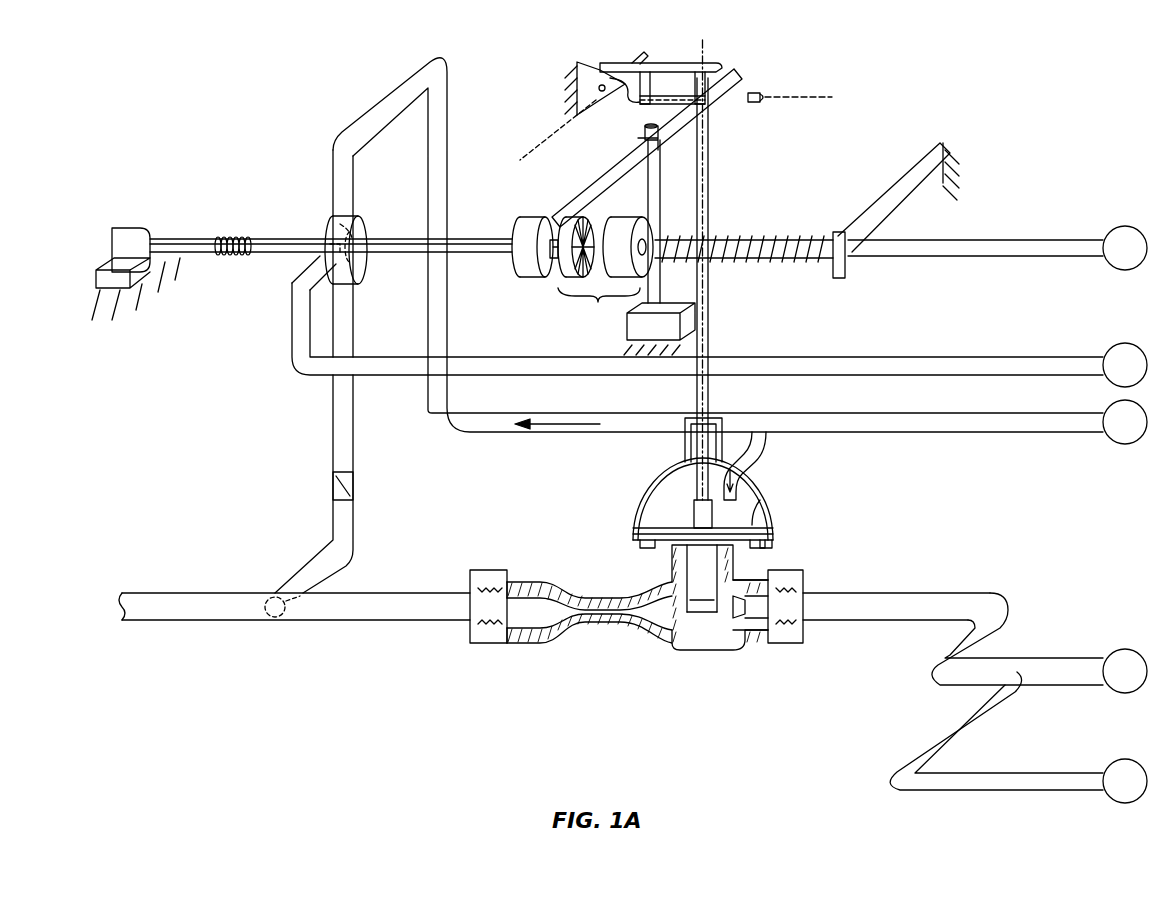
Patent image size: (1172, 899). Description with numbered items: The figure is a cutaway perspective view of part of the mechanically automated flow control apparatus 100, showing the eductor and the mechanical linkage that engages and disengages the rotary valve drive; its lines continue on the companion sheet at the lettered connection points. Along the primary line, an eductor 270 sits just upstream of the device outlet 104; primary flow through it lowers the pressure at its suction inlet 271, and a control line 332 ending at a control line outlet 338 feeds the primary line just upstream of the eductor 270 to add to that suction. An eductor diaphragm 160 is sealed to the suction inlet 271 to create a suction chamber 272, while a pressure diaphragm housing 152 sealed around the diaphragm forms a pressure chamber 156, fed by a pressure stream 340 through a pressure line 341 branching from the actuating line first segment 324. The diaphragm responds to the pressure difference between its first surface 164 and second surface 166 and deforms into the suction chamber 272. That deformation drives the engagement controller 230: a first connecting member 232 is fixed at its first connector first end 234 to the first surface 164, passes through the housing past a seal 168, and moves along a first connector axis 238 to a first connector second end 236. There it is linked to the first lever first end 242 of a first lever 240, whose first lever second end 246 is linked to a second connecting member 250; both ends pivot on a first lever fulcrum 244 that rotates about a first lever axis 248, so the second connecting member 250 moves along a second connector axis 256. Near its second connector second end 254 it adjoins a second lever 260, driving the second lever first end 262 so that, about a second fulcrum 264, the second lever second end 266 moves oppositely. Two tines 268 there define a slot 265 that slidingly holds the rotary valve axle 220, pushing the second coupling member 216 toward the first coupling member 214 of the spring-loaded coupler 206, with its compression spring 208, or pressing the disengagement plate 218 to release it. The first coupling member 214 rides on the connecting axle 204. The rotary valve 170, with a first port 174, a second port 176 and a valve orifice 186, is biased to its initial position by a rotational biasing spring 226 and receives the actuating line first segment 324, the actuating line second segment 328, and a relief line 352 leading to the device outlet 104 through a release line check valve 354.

The flow control apparatus 100 is at (232, 56).
The device outlet 104 is at (190, 598).
The pressure diaphragm housing 152 is at (760, 478).
The pressure chamber 156 is at (652, 520).
The eductor diaphragm 160 is at (633, 530).
The first surface 164 is at (755, 520).
The second surface 166 is at (770, 545).
The seal 168 is at (690, 445).
The rotary valve 170 is at (366, 268).
The first port 174 is at (333, 222).
The second port 176 is at (364, 224).
The valve orifice 186 is at (328, 216).
The connecting axle 204 is at (950, 240).
The spring-loaded coupler 206 is at (555, 258).
The compression spring 208 is at (745, 262).
The first coupling member 214 is at (635, 268).
The second coupling member 216 is at (550, 265).
The disengagement plate 218 is at (512, 247).
The rotary valve axle 220 is at (290, 262).
The rotational biasing spring 226 is at (240, 238).
The engagement controller 230 is at (628, 40).
The first connecting member 232 is at (697, 400).
The first connector first end 234 is at (697, 512).
The first connector second end 236 is at (702, 80).
The first connector axis 238 is at (708, 343).
The first lever 240 is at (660, 68).
The first lever first end 242 is at (690, 66).
The first lever fulcrum 244 is at (634, 62).
The first lever second end 246 is at (630, 108).
The first lever axis 248 is at (546, 137).
The second connecting member 250 is at (710, 120).
The second connector second end 254 is at (750, 102).
The second connector axis 256 is at (775, 94).
The second lever 260 is at (668, 158).
The second lever first end 262 is at (738, 88).
The second fulcrum 264 is at (700, 158).
The slot 265 is at (520, 262).
The second lever second end 266 is at (572, 235).
The tines 268 is at (520, 238).
The eductor 270 is at (726, 668).
The suction inlet 271 is at (688, 556).
The suction chamber 272 is at (700, 580).
The actuating line first segment 324 is at (392, 108).
The actuating line second segment 328 is at (950, 355).
The control line 332 is at (928, 740).
The control line outlet 338 is at (1006, 668).
The pressure stream 340 is at (752, 438).
The pressure line 341 is at (762, 418).
The relief line 352 is at (343, 428).
The release line check valve 354 is at (335, 488).